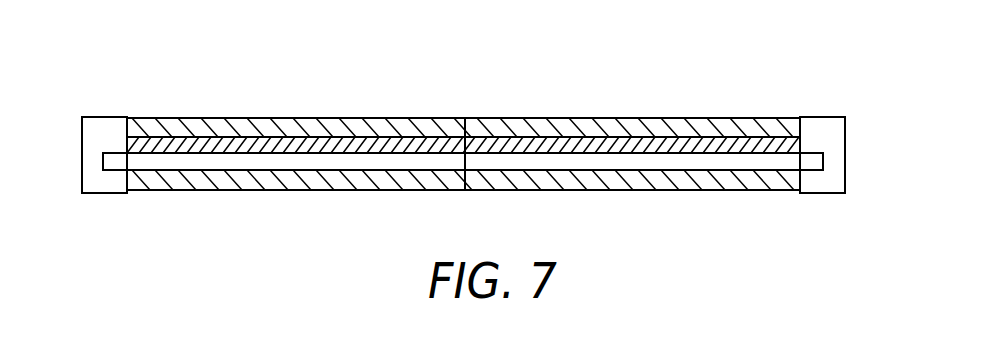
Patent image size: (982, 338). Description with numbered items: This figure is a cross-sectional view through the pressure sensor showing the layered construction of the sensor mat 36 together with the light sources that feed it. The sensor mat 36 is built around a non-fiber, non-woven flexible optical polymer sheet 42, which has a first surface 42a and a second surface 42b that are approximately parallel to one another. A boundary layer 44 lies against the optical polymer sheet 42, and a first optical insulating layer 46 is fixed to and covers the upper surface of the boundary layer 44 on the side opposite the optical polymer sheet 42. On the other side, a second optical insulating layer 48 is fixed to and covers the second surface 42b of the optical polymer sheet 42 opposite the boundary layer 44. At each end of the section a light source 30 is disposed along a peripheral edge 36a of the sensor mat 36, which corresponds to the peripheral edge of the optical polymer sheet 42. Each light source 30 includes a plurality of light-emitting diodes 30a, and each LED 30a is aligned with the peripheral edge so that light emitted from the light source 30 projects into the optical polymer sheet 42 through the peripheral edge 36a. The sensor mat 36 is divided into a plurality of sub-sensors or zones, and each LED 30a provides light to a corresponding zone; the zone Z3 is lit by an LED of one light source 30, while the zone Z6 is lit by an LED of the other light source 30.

The light source 30 is at (90, 123).
The light-emitting diode 30a is at (110, 150).
The sensor mat 36 is at (160, 118).
The peripheral edge 36a is at (127, 165).
The optical polymer sheet 42 is at (362, 163).
The first surface 42a is at (325, 137).
The second surface 42b is at (343, 172).
The boundary layer 44 is at (193, 148).
The first optical insulating layer 46 is at (437, 132).
The second optical insulating layer 48 is at (305, 185).
The zone Z3 is at (263, 118).
The zone Z6 is at (675, 120).